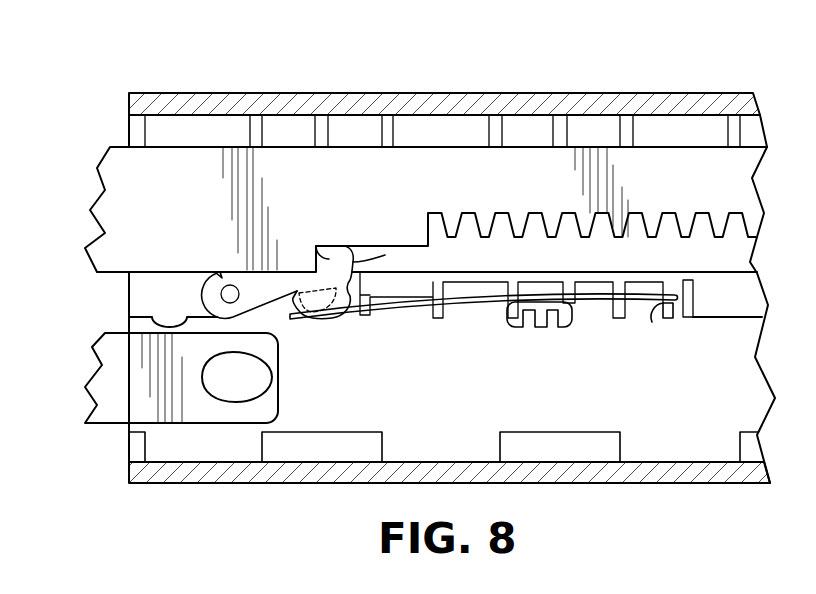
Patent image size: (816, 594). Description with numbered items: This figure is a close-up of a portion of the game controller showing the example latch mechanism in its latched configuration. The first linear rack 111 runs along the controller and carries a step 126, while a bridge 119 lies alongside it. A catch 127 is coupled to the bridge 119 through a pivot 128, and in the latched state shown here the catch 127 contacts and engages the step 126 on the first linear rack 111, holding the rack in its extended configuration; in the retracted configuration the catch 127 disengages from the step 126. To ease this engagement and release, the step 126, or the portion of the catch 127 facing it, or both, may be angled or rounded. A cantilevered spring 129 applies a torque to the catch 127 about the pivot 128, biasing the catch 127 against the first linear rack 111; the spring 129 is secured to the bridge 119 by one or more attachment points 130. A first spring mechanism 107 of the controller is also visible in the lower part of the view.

The first spring mechanism 107 is at (107, 424).
The first linear rack 111 is at (458, 192).
The bridge 119 is at (442, 92).
The step 126 is at (332, 252).
The catch 127 is at (355, 258).
The pivot 128 is at (213, 280).
The cantilevered spring 129 is at (411, 316).
The attachment points 130 is at (540, 328).